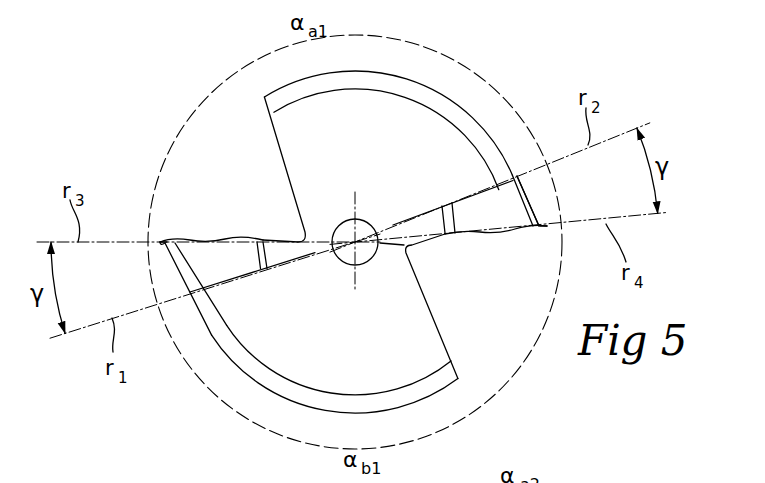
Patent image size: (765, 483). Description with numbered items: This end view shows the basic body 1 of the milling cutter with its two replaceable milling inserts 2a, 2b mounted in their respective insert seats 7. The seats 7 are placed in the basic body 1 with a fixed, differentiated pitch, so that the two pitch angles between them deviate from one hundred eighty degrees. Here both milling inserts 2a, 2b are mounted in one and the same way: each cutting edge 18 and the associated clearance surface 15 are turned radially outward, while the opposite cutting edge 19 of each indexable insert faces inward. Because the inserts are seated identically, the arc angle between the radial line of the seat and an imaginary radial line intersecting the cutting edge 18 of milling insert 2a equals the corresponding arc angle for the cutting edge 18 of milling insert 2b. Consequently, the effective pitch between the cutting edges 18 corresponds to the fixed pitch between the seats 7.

The basic body 1 is at (216, 358).
The milling insert 2a is at (222, 232).
The milling insert 2b is at (494, 247).
The insert seat 7 is at (238, 283).
The side surface 15 is at (527, 197).
The cutting edge 18 is at (147, 257).
The cutting edge 19 is at (262, 240).